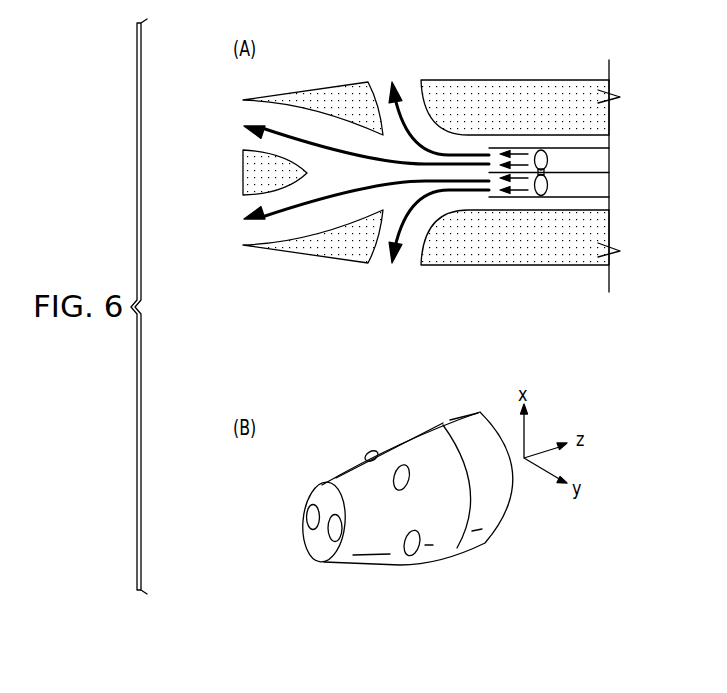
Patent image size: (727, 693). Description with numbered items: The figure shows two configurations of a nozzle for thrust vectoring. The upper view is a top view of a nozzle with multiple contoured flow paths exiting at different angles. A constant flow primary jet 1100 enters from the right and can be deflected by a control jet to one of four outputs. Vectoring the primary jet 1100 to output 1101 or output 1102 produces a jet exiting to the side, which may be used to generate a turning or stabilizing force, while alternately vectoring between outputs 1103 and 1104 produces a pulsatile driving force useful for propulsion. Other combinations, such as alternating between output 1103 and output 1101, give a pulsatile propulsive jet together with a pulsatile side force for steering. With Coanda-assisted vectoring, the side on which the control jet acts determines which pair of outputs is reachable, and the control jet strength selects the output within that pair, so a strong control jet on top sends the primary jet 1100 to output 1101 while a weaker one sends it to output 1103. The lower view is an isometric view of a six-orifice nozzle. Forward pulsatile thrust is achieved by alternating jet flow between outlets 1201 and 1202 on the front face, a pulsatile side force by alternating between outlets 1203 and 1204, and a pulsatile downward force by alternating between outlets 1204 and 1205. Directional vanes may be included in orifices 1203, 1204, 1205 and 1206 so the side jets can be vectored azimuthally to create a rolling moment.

The primary jet 1100 is at (522, 154).
The output 1101 is at (383, 78).
The output 1102 is at (379, 266).
The output 1103 is at (243, 114).
The output 1104 is at (242, 233).
The outlet 1201 is at (328, 538).
The outlet 1202 is at (305, 520).
The outlet 1203 is at (402, 535).
The outlet 1204 is at (435, 467).
The outlet 1205 is at (370, 452).
The orifice 1206 is at (336, 471).